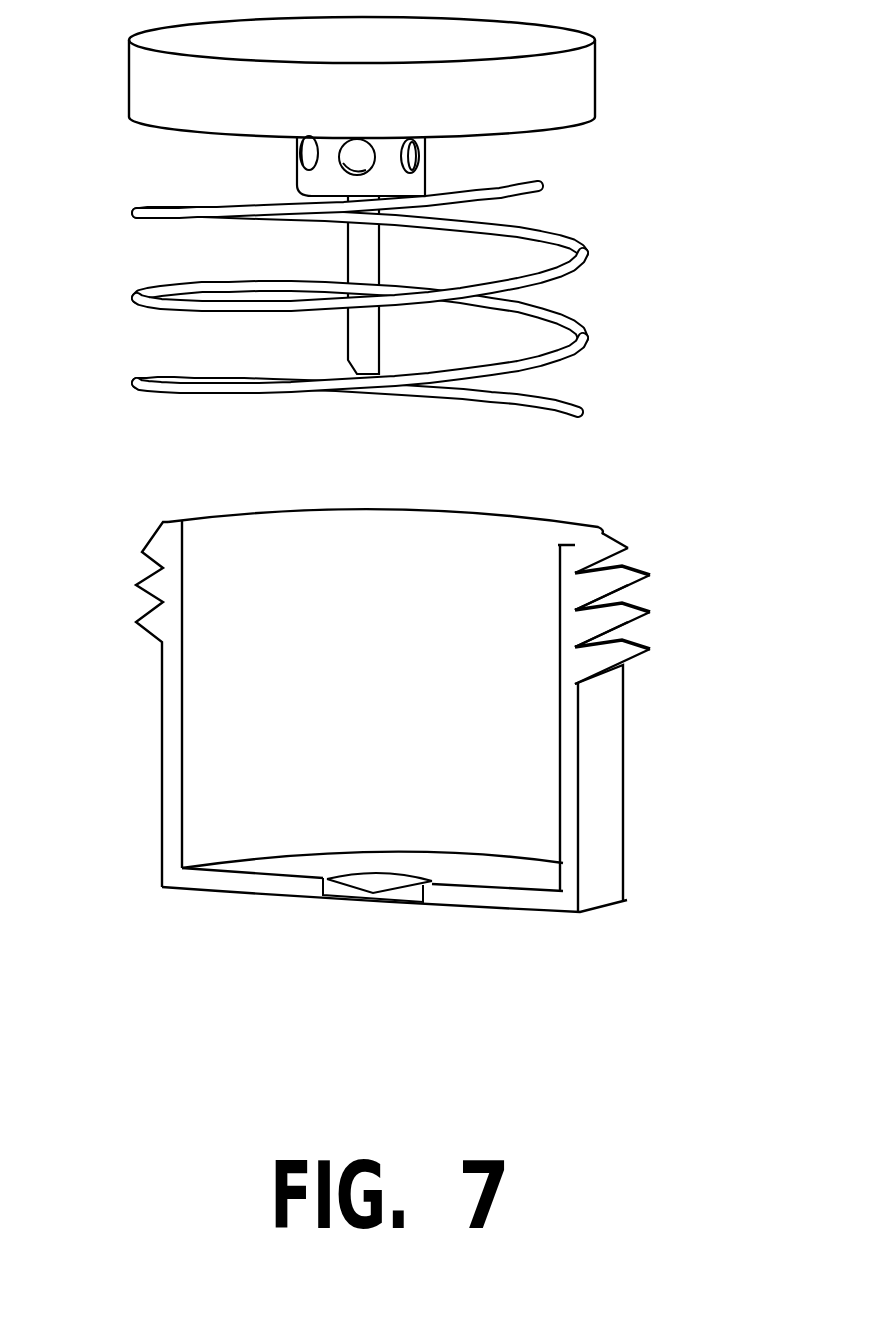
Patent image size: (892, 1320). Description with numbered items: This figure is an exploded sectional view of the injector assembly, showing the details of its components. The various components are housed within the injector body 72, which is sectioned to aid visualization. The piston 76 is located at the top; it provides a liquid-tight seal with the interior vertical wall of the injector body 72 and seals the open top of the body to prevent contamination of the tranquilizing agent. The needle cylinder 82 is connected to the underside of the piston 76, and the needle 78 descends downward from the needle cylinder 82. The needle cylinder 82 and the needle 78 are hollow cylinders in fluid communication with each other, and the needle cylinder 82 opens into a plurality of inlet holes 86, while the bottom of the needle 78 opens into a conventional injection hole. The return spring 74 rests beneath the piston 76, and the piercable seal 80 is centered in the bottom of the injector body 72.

The injector body 72 is at (600, 763).
The return spring 74 is at (548, 360).
The piston 76 is at (597, 92).
The needle 78 is at (348, 361).
The piercable seal 80 is at (363, 902).
The needle cylinder 82 is at (297, 173).
The inlet holes 86 is at (367, 172).